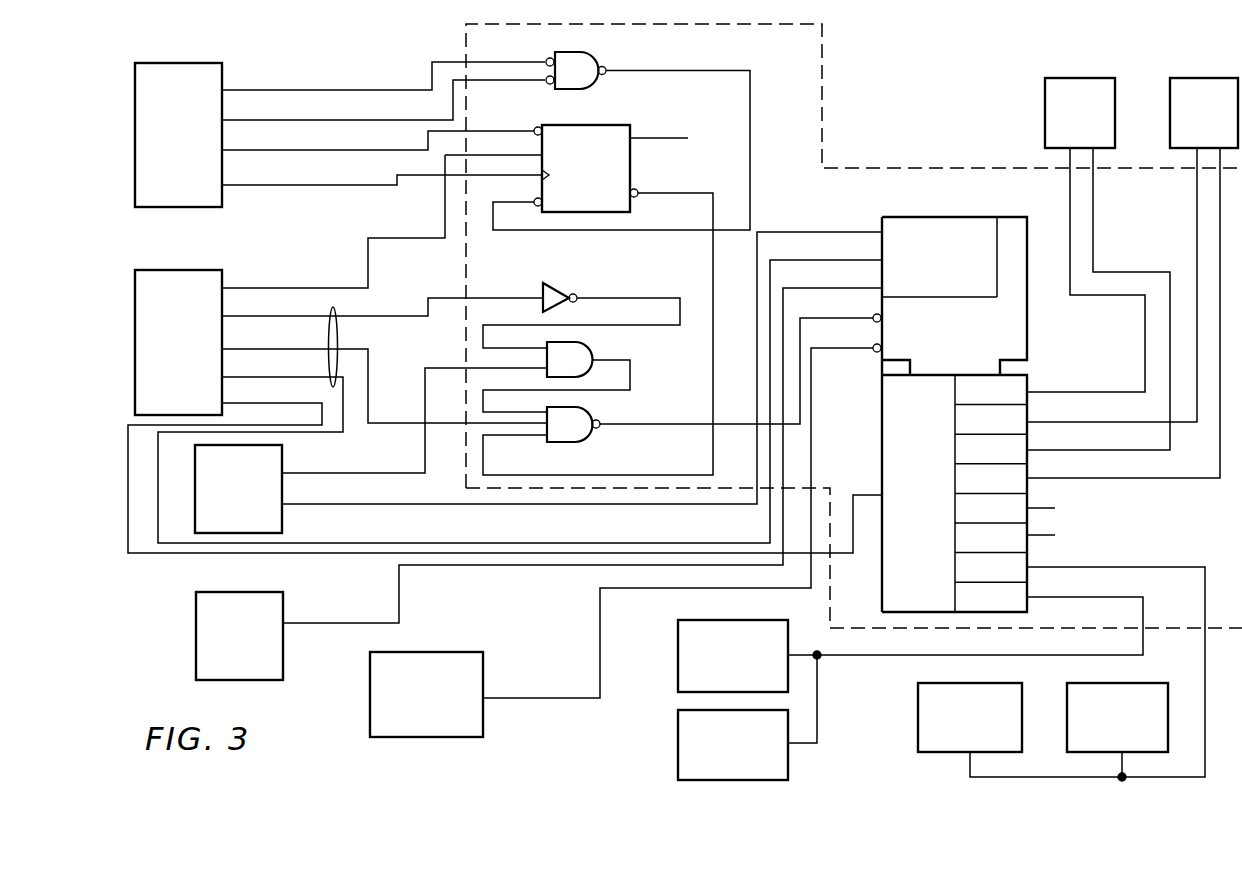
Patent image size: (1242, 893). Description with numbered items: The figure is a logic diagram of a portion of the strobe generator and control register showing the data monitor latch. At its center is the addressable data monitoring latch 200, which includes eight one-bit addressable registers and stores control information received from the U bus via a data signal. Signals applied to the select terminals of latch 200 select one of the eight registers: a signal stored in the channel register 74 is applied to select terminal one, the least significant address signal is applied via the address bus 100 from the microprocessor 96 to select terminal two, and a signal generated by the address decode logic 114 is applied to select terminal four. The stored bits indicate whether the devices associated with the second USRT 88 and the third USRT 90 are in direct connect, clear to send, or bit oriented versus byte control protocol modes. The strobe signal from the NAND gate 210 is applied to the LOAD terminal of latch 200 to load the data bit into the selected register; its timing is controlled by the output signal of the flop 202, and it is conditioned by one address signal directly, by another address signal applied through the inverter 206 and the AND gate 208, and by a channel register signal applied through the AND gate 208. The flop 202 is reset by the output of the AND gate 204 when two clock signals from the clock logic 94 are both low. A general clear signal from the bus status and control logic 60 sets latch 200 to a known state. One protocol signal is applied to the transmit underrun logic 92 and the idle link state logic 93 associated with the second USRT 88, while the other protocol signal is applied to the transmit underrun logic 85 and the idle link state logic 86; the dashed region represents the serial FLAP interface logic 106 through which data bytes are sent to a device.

The bus status and control logic 60 is at (435, 652).
The channel register 74 is at (283, 515).
The transmit underrun logic -3 85 is at (918, 708).
The idle link state logic -3 86 is at (1067, 700).
The USRT-2 88 is at (1068, 78).
The USRT-3 90 is at (1193, 78).
The transmit underrun logic -2 92 is at (678, 644).
The idle link state logic -2 93 is at (678, 742).
The clock logic 94 is at (178, 63).
The microprocessor 96 is at (175, 270).
The address bus 100 is at (337, 311).
The serial FLAP interface logic 106 is at (822, 68).
The address decode logic 114 is at (196, 606).
The addressable data monitoring latch 200 is at (945, 217).
The flop 202 is at (600, 125).
The AND gate 204 is at (564, 52).
The inverter 206 is at (560, 283).
The AND gate 208 is at (590, 346).
The NAND gate 210 is at (585, 442).